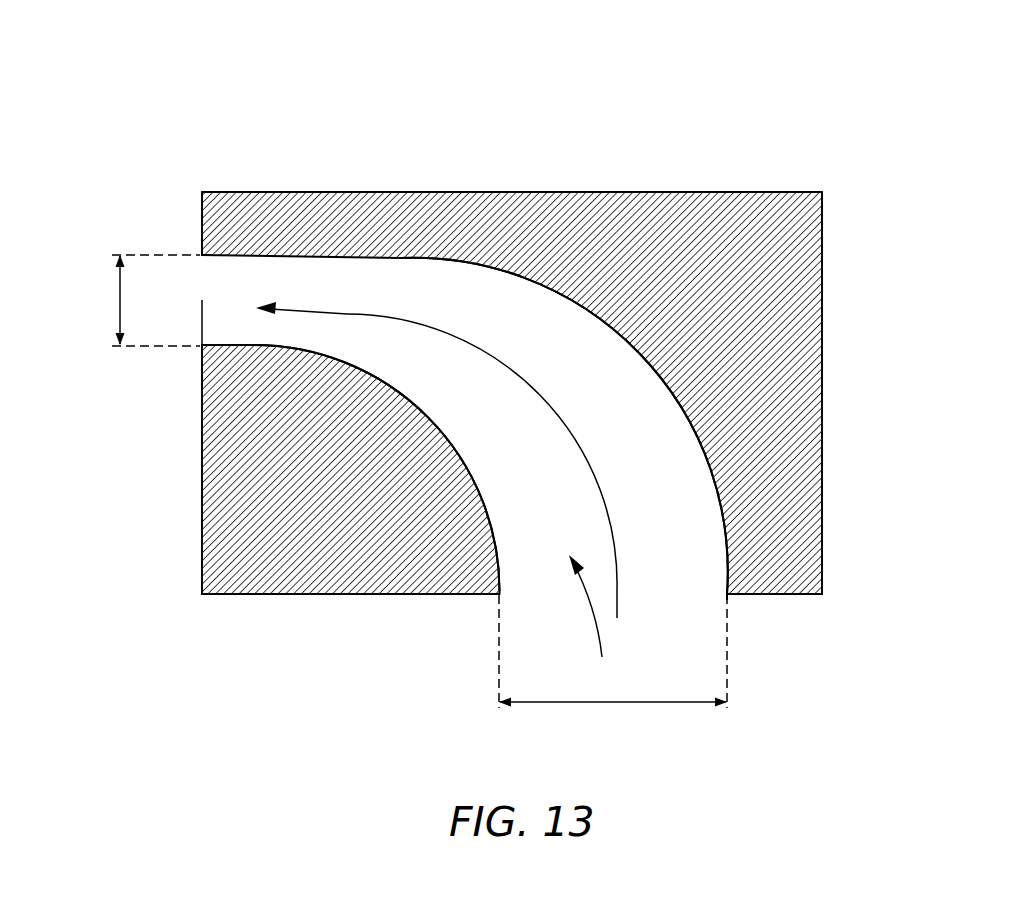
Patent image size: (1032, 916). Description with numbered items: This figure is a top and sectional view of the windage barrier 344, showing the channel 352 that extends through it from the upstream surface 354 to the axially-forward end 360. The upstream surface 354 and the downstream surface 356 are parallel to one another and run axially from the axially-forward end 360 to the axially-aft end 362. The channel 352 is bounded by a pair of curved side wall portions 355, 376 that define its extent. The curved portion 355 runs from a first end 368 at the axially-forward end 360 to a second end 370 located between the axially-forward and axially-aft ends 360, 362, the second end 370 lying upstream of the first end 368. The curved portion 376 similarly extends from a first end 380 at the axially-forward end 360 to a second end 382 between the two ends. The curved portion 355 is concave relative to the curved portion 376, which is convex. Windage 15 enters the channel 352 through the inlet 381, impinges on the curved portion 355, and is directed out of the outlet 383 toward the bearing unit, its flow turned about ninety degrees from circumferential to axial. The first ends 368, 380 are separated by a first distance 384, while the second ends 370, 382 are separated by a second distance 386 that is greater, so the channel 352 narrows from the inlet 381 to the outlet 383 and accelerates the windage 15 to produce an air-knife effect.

The windage barrier 344 is at (598, 70).
The downstream surface 356 is at (637, 192).
The axially-aft end 362 is at (822, 318).
The first end 368 is at (202, 254).
The first distance 384 is at (117, 305).
The outlet 383 is at (199, 372).
The first end 380 is at (202, 347).
The axially-forward end 360 is at (202, 482).
The upstream surface 354 is at (357, 594).
The second end 382 is at (497, 595).
The channel 352 is at (595, 620).
The inlet 381 is at (727, 595).
The second end 370 is at (729, 595).
The second distance 386 is at (652, 703).
The windage 15 is at (578, 442).
The curved side wall portion 376 is at (484, 505).
The curved side wall portion 355 is at (702, 457).